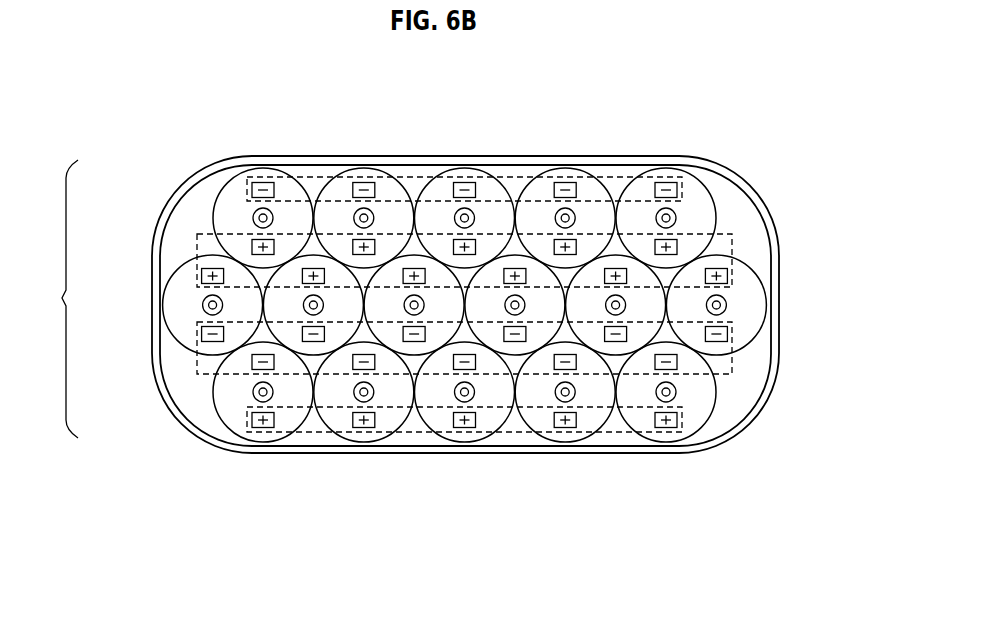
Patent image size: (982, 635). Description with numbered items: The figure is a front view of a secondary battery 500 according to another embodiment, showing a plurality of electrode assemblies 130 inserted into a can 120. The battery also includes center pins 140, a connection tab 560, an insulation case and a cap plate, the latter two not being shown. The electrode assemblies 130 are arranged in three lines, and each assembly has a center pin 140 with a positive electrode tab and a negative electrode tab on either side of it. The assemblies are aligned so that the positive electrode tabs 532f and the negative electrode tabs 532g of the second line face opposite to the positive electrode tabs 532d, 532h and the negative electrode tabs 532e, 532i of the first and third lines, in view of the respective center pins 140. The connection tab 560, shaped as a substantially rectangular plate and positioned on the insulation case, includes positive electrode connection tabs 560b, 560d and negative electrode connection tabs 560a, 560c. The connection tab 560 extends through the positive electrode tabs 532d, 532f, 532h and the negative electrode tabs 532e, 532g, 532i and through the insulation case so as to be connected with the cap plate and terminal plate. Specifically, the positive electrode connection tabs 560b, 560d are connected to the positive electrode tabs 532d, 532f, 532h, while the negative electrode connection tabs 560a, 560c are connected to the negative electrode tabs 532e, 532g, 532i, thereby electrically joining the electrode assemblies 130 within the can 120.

The secondary battery 500 is at (217, 94).
The can 120 is at (606, 164).
The electrode assemblies 130 is at (711, 217).
The center pins 140 is at (678, 216).
The positive electrode tab 532d is at (678, 247).
The negative electrode tab 532e is at (684, 184).
The positive electrode tab 532f is at (729, 277).
The negative electrode tab 532g is at (729, 333).
The positive electrode tab 532h is at (680, 421).
The negative electrode tab 532i is at (678, 362).
The connection tab 560 is at (48, 299).
The negative electrode connection tab 560a is at (247, 190).
The positive electrode connection tab 560b is at (197, 245).
The negative electrode connection tab 560c is at (197, 333).
The positive electrode connection tab 560d is at (247, 418).